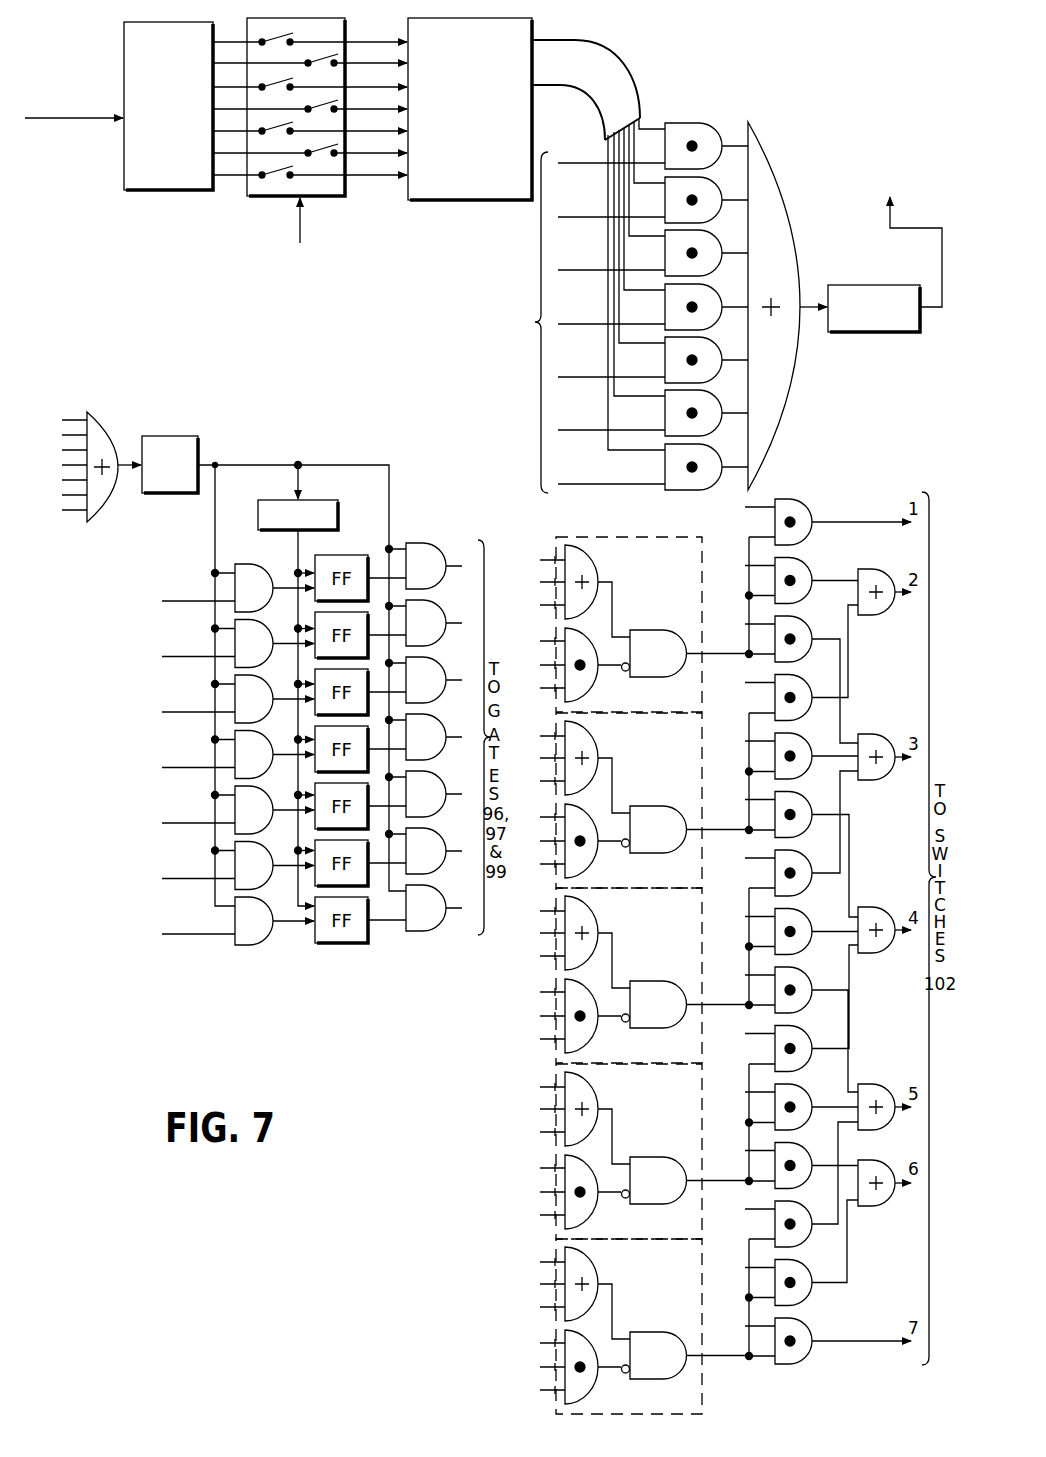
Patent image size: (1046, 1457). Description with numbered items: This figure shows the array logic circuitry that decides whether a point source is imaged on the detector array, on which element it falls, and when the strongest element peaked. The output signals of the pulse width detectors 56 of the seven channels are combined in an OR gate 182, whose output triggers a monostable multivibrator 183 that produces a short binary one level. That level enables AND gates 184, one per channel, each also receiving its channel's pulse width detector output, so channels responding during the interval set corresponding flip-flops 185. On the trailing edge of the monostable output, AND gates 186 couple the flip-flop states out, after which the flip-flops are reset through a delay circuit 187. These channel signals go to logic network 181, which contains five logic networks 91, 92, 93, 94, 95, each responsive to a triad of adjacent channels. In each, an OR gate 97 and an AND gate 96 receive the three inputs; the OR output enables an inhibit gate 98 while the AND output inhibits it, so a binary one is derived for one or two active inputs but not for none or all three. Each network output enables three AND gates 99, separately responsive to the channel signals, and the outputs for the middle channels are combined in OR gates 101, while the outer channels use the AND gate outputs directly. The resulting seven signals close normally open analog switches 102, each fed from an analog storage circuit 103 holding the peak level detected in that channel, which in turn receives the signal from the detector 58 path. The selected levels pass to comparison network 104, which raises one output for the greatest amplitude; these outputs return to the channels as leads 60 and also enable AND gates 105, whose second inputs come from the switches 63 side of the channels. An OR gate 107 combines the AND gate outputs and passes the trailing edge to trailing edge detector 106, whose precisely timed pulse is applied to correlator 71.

The detector 58 is at (71, 129).
The analog switches 102 is at (341, 30).
The analog storage circuit 103 is at (151, 140).
The comparison network 104 is at (535, 30).
The leads 60 is at (633, 84).
The logic network 181 is at (879, 506).
The switches 63 is at (547, 322).
The AND gates 105 is at (712, 128).
The OR gate 107 is at (786, 424).
The trailing edge detector 106 is at (840, 285).
The correlator 71 is at (890, 221).
The pulse width detectors 56 is at (69, 583).
The OR gate 182 is at (104, 420).
The monostable multivibrator 183 is at (199, 441).
The delay circuit 187 is at (277, 500).
The AND gates 184 is at (262, 566).
The flip-flops 185 is at (372, 622).
The AND gates 186 is at (438, 602).
The logic network 91 is at (690, 570).
The logic network 92 is at (690, 746).
The logic network 93 is at (690, 921).
The logic network 94 is at (690, 1097).
The logic network 95 is at (690, 1272).
The OR gate 97 is at (598, 572).
The AND gate 96 is at (596, 685).
The inhibit gate 98 is at (665, 629).
The AND gates 99 is at (812, 543).
The OR gates 101 is at (886, 616).